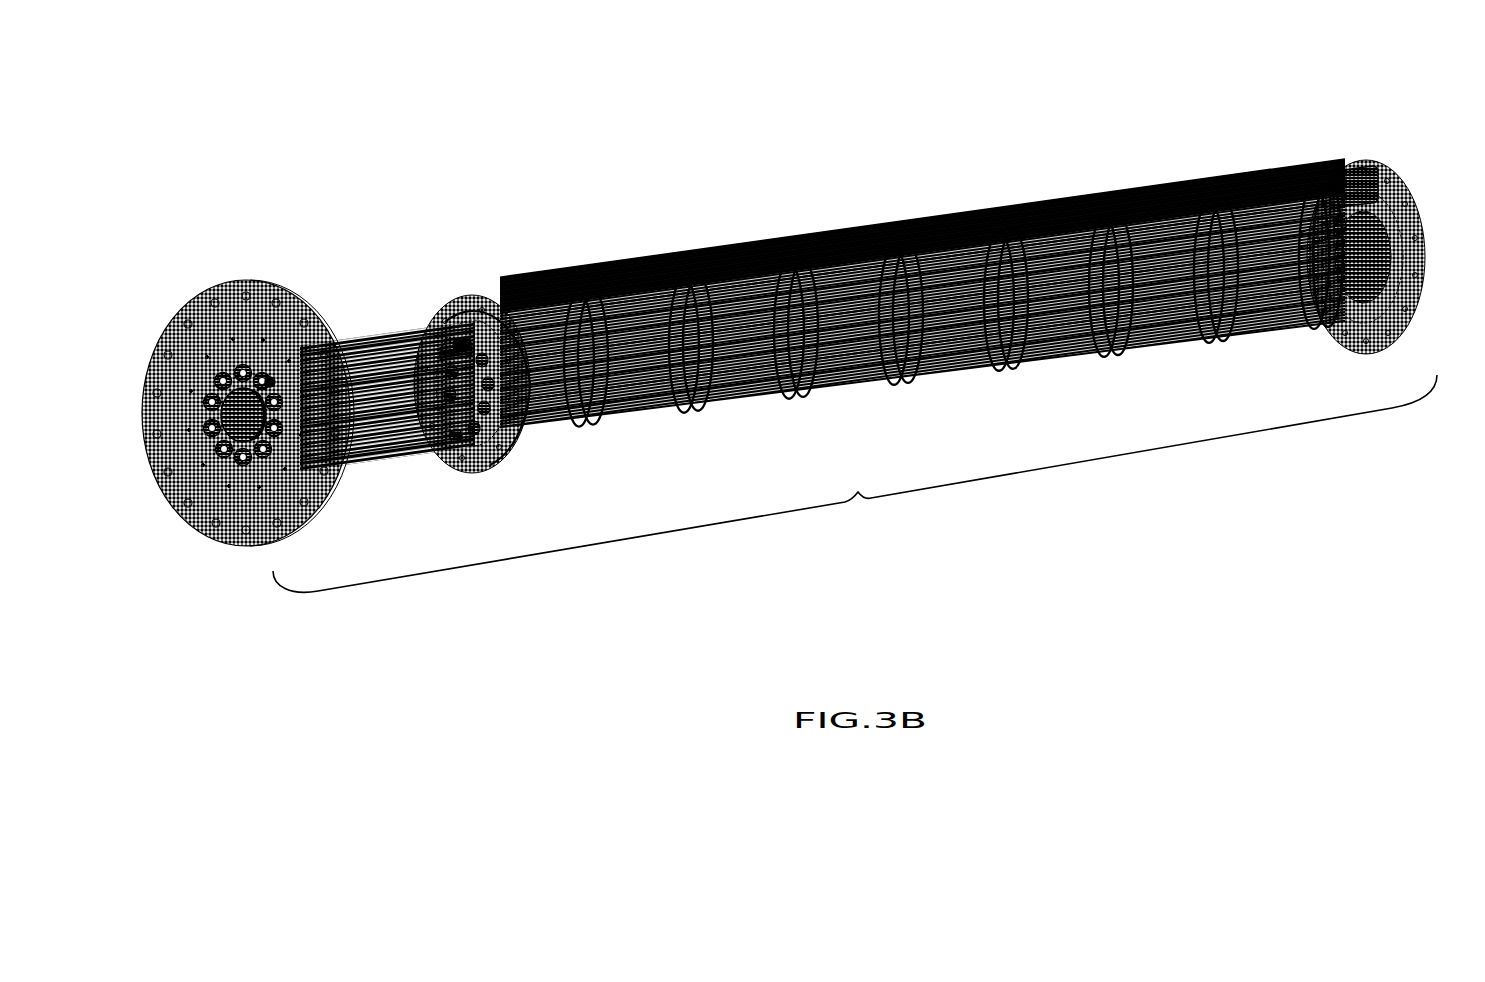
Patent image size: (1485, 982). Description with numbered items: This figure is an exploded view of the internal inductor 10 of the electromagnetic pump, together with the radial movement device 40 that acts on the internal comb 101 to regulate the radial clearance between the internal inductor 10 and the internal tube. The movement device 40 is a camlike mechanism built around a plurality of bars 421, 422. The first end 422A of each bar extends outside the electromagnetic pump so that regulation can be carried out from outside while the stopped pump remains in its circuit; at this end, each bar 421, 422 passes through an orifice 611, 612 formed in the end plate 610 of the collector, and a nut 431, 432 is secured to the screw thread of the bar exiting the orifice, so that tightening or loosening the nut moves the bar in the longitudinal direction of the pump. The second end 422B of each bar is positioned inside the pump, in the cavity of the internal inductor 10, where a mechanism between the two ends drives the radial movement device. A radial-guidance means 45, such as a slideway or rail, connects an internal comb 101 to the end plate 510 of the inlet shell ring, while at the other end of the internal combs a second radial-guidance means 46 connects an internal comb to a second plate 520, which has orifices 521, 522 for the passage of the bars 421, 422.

The internal inductor 10 is at (852, 172).
The internal comb 101 is at (1342, 170).
The radial-guidance means 45 is at (1373, 185).
The second end of bar 422B is at (1340, 223).
The end plate of the inlet shell ring 510 is at (1420, 313).
The radial movement device 40 is at (855, 483).
The end plate of the collector 610 is at (157, 333).
The orifice 611 is at (250, 362).
The nut 431 is at (244, 368).
The orifice 612 is at (253, 393).
The nut 432 is at (270, 381).
The first end of bar 422A is at (353, 370).
The bar 421 is at (453, 343).
The orifice 521 is at (463, 343).
The bar 422 is at (473, 350).
The second radial-guidance means 46 is at (487, 298).
The orifice 522 is at (510, 413).
The second plate 520 is at (472, 473).